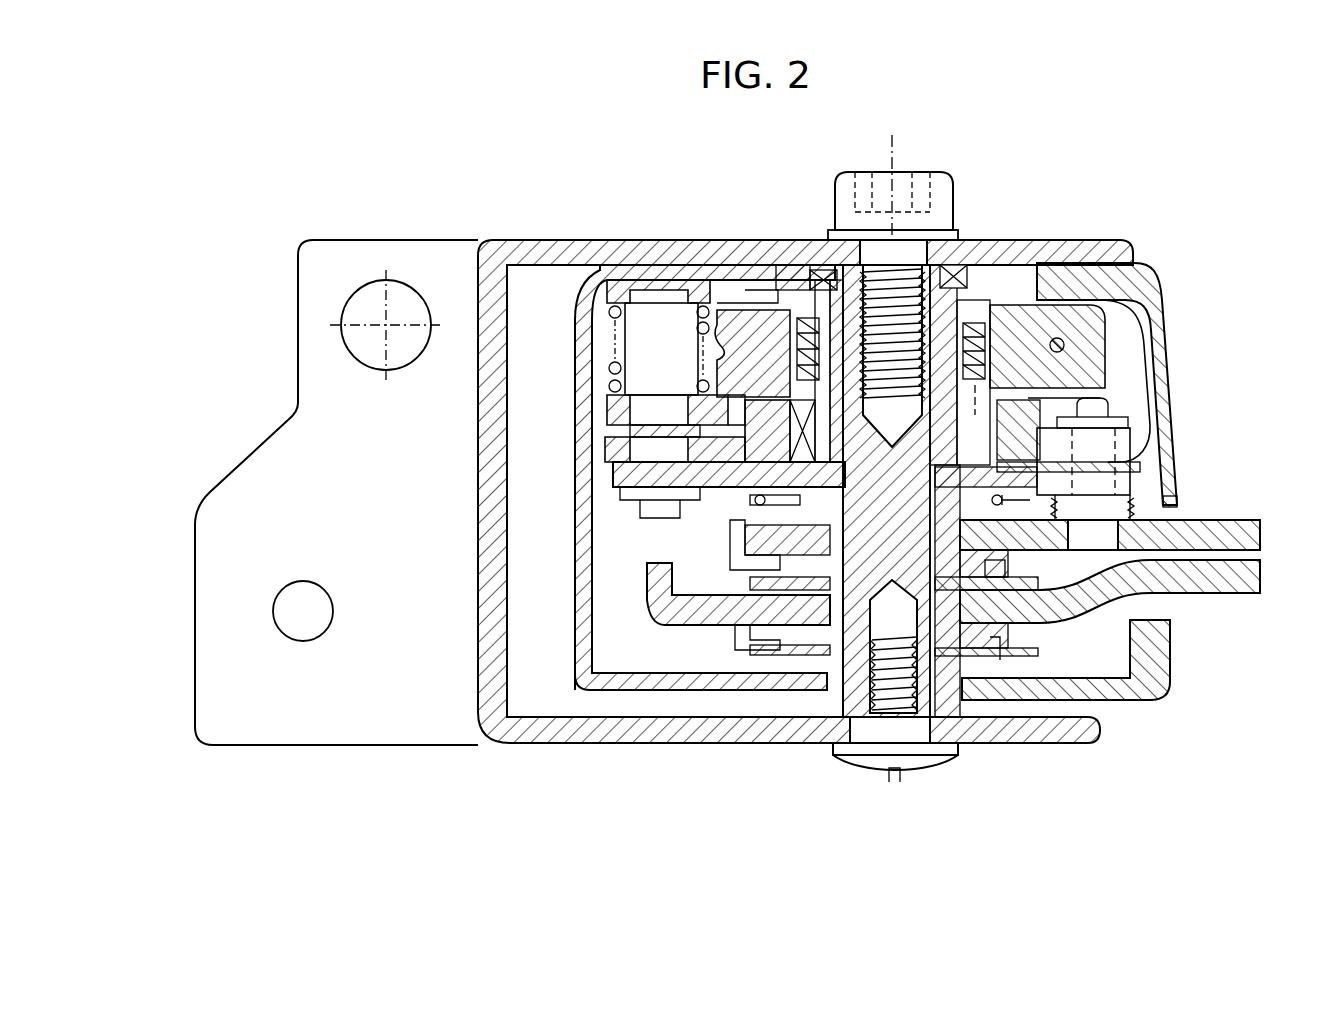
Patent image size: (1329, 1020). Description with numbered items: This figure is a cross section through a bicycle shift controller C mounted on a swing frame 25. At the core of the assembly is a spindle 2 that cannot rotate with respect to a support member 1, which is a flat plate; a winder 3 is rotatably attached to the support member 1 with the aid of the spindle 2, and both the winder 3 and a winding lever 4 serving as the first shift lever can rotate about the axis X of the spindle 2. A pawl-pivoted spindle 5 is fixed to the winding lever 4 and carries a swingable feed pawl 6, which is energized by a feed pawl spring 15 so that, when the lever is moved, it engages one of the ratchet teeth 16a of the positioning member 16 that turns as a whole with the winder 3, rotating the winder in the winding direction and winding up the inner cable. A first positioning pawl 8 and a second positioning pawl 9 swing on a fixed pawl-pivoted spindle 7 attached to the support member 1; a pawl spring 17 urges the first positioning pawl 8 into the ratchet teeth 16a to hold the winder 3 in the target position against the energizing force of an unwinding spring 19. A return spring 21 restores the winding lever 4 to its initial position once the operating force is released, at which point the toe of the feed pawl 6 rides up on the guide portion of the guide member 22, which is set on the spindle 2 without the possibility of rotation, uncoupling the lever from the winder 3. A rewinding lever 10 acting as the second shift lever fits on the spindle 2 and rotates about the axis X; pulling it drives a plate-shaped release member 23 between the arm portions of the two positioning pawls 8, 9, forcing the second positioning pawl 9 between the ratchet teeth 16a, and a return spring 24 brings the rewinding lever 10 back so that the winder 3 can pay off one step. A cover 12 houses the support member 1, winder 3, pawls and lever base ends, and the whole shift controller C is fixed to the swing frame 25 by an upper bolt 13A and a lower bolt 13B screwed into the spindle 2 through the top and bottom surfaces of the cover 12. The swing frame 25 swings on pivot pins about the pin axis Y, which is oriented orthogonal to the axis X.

The support member 1 is at (730, 290).
The spindle 2 is at (866, 712).
The winder 3 is at (1103, 338).
The winding lever 4 is at (1240, 536).
The pawl-pivoted spindle 5 is at (1156, 362).
The feed pawl 6 is at (1168, 396).
The fixed pawl-pivoted spindle 7 is at (625, 334).
The first positioning pawl 8 is at (603, 416).
The second positioning pawl 9 is at (605, 455).
The rewinding lever 10 is at (1222, 592).
The cover 12 is at (655, 272).
The upper bolt 13A is at (947, 197).
The lower bolt 13B is at (930, 770).
The feed pawl spring 15 is at (1142, 503).
The positioning member 16 is at (1045, 443).
The ratchet teeth 16a is at (1047, 453).
The pawl spring 17 is at (612, 368).
The unwinding spring 19 is at (970, 323).
The return spring 21 is at (727, 535).
The guide member 22 is at (727, 478).
The release member 23 is at (650, 577).
The return spring 24 is at (740, 648).
The swing frame 25 is at (335, 257).
The shift controller C is at (1158, 250).
The axis of the spindle X is at (890, 158).
The pin axis Y is at (386, 325).